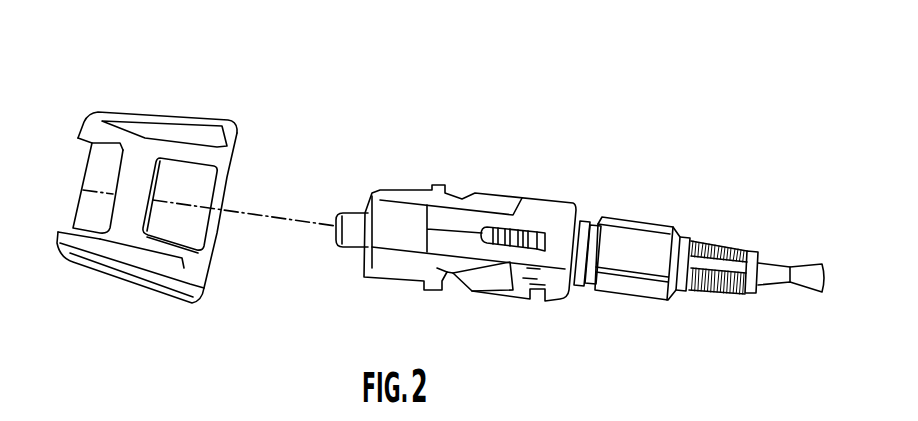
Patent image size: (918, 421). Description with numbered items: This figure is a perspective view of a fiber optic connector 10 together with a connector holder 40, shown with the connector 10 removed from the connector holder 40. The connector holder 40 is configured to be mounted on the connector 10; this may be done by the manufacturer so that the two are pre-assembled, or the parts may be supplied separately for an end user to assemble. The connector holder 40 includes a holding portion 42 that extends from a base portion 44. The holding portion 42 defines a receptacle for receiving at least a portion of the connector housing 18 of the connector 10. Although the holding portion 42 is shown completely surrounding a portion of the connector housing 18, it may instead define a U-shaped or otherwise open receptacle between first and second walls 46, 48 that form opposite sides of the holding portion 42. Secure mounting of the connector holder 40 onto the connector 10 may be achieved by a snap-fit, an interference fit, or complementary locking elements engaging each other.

The fiber optic connector 10 is at (527, 151).
The connector housing 18 is at (402, 188).
The connector holder 40 is at (121, 84).
The holding portion 42 is at (88, 120).
The base portion 44 is at (152, 117).
The first wall 46 is at (102, 253).
The second wall 48 is at (190, 140).